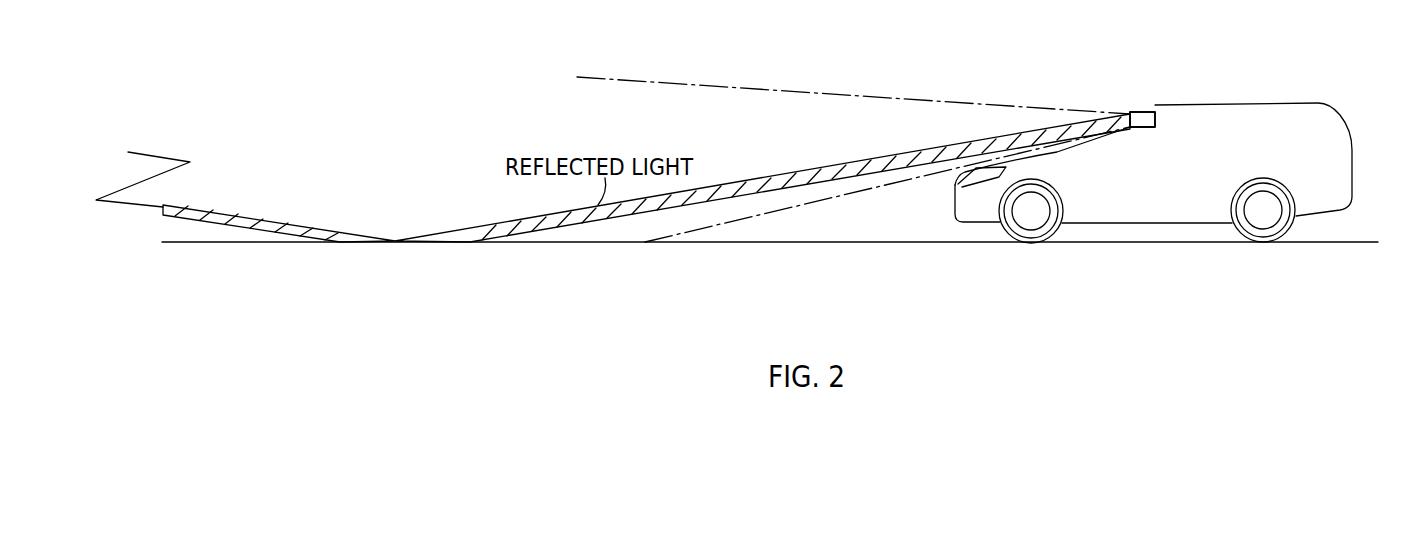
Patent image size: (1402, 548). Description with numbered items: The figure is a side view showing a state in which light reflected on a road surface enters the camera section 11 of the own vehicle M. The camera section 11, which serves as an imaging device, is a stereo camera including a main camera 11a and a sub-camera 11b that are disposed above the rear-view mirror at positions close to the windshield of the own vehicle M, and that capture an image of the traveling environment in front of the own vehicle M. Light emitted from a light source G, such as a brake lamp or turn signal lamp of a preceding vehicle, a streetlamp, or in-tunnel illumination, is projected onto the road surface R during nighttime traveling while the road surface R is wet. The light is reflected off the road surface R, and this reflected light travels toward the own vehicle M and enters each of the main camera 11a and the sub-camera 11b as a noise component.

The light source G is at (128, 150).
The road surface R is at (577, 244).
The own vehicle M is at (1243, 103).
The camera section 11 is at (1141, 128).
The main camera 11a is at (1123, 200).
The sub-camera 11b is at (1158, 200).